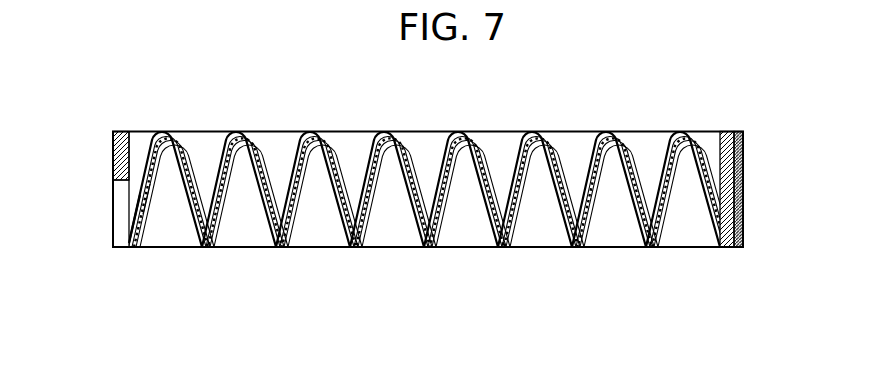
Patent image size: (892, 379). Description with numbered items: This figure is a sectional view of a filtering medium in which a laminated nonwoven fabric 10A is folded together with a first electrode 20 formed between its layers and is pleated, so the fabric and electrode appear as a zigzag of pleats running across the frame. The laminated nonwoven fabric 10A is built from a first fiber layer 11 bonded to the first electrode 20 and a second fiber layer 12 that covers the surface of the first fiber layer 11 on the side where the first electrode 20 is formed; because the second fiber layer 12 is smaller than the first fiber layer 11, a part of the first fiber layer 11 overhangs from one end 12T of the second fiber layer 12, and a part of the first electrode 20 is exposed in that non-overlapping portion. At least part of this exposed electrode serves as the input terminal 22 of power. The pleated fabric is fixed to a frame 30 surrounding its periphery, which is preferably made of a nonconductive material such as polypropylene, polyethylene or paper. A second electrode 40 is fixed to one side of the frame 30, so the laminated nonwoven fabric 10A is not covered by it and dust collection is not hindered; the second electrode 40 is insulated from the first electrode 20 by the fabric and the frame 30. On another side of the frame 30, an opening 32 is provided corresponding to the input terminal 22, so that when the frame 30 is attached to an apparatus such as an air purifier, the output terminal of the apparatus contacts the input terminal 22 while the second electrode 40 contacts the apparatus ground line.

The laminated nonwoven fabric 10A is at (432, 237).
The first fiber layer 11 is at (270, 185).
The second fiber layer 12 is at (292, 185).
The one end of second fiber layer 12T is at (131, 176).
The first electrode 20 is at (430, 215).
The input terminal 22 is at (148, 206).
The frame 30 is at (726, 248).
The opening 32 is at (122, 243).
The second electrode 40 is at (743, 207).